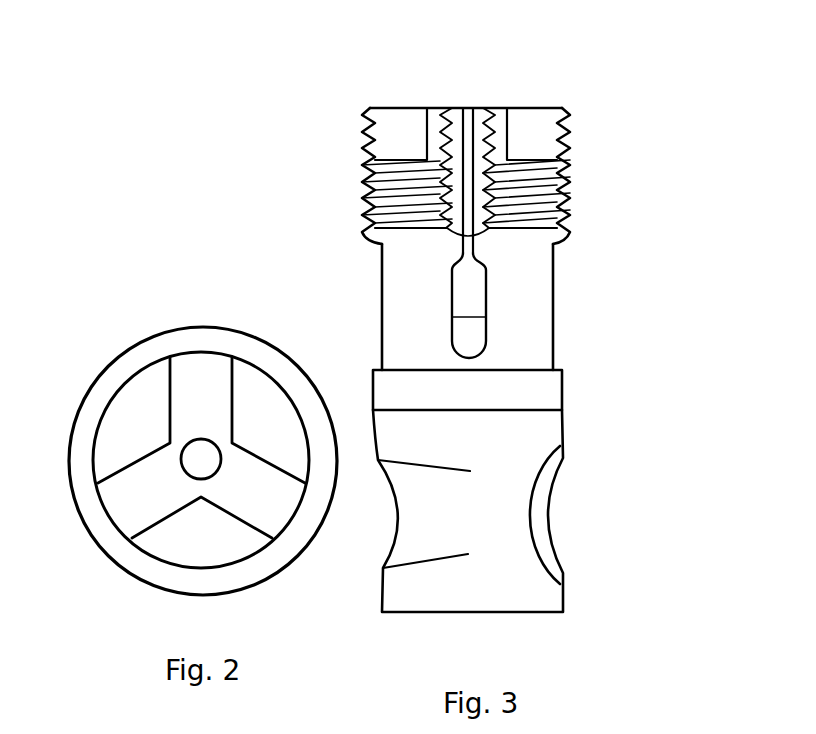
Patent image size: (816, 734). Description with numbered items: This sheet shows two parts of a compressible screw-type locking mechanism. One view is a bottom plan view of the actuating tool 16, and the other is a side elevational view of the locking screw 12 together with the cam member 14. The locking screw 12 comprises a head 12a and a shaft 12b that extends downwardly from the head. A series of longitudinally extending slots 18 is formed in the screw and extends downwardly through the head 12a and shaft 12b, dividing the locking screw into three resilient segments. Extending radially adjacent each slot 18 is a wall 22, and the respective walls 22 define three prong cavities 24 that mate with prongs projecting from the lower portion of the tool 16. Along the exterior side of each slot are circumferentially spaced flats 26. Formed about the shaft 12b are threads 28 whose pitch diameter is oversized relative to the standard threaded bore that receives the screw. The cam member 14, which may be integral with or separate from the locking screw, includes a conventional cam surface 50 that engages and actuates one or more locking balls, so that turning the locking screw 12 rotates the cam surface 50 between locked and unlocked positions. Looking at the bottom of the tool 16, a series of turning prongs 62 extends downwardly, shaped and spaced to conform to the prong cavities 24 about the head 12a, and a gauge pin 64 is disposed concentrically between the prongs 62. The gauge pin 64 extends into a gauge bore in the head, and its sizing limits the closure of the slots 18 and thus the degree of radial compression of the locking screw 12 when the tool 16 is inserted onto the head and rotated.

In FIG. 3, the locking screw 12 is at (513, 310).
In FIG. 3, the head 12a is at (513, 183).
In FIG. 3, the shaft 12b is at (566, 289).
In FIG. 3, the cam member 14 is at (556, 511).
In FIG. 2, the actuating tool 16 is at (97, 366).
In FIG. 3, the longitudinal slots 18 is at (467, 138).
In FIG. 3, the wall 22 is at (407, 123).
In FIG. 3, the prong cavities 24 is at (402, 155).
In FIG. 3, the flats 26 is at (453, 138).
In FIG. 3, the threads 28 is at (567, 206).
In FIG. 3, the cam surface 50 is at (513, 522).
In FIG. 2, the turning prongs 62 is at (137, 388).
In FIG. 2, the gauge pin 64 is at (202, 462).